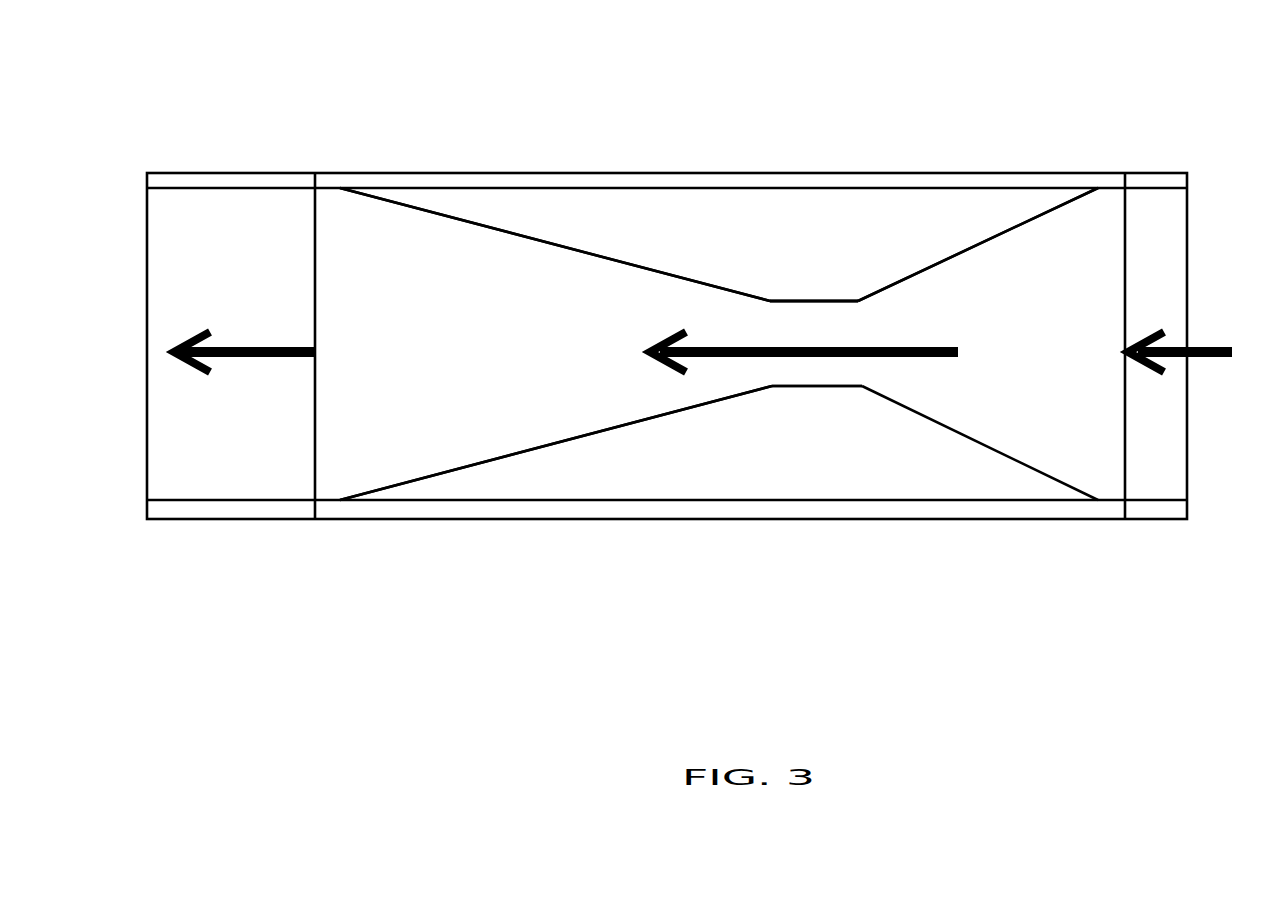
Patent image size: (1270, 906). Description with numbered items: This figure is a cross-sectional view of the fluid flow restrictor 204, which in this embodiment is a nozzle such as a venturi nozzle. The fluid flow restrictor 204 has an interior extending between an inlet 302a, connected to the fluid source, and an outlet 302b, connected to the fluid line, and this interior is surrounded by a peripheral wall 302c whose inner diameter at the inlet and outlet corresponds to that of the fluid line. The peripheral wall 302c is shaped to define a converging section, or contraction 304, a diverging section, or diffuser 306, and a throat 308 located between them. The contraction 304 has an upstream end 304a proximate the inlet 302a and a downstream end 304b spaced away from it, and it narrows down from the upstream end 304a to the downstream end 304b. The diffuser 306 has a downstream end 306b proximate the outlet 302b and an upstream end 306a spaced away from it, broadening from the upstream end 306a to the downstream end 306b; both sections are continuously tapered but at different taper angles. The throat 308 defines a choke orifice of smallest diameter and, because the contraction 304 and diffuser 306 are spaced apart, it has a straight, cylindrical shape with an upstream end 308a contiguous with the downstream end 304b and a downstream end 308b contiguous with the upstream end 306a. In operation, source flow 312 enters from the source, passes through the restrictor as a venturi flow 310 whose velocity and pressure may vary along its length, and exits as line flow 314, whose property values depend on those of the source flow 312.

The fluid flow restrictor 204 is at (454, 92).
The inlet 302a is at (1132, 258).
The outlet 302b is at (297, 248).
The peripheral wall 302c is at (783, 301).
The contraction 304 is at (1034, 357).
The upstream end of the contraction 304a is at (1098, 188).
The downstream end of the contraction 304b is at (855, 302).
The diffuser 306 is at (568, 357).
The upstream end of the diffuser 306a is at (785, 453).
The downstream end of the diffuser 306b is at (340, 187).
The throat 308 is at (847, 339).
The upstream end of the throat 308a is at (855, 302).
The downstream end of the throat 308b is at (777, 386).
The venturi flow 310 is at (945, 346).
The source flow 312 is at (1225, 360).
The line flow 314 is at (267, 358).